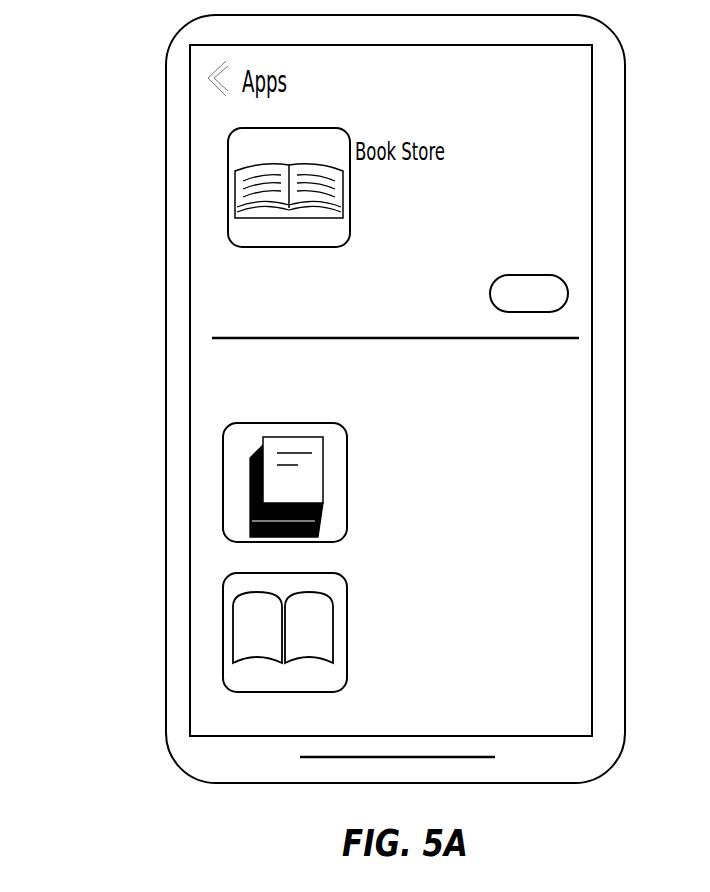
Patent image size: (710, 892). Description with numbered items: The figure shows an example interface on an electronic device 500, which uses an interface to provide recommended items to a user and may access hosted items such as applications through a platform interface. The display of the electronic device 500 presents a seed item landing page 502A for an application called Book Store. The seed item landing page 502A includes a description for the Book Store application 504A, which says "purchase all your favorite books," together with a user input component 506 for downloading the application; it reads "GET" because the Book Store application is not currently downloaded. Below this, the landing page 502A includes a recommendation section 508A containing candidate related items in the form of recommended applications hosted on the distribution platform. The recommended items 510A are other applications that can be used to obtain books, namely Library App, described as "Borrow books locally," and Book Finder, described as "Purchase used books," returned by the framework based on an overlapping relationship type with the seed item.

The electronic device 500 is at (625, 100).
The seed item landing page 502A is at (208, 148).
The description for the Book Store application 504A is at (213, 295).
The user input component 506 is at (568, 292).
The recommendation section 508A is at (197, 396).
The recommended items 510A is at (213, 548).